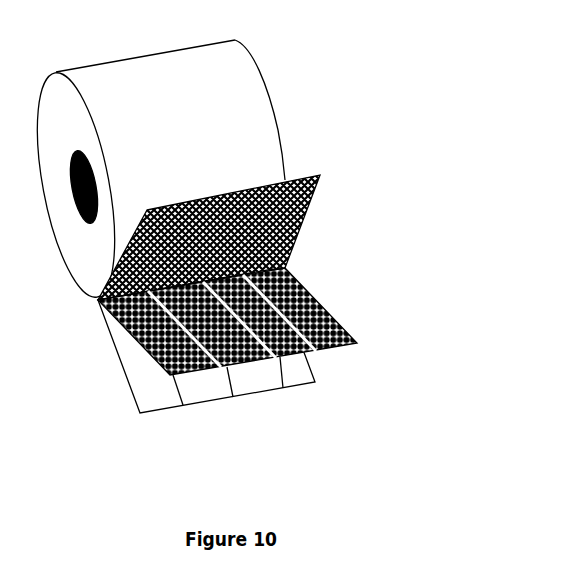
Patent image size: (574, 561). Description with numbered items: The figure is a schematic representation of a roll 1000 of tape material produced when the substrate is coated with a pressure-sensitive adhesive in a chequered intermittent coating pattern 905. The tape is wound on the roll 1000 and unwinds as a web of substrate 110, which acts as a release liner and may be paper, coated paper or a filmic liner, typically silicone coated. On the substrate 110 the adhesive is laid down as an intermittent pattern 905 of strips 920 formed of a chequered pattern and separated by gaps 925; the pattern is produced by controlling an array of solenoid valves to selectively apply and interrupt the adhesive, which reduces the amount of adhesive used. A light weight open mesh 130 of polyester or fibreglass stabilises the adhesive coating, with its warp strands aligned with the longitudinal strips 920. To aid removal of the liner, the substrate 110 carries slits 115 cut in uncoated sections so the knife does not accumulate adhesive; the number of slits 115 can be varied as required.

The roll of tape material 1000 is at (403, 134).
The open mesh 130 is at (288, 233).
The substrate 110 is at (137, 378).
The slits 115 is at (179, 393).
The intermittent coating pattern 905 is at (250, 349).
The strips 920 is at (314, 302).
The gaps 925 is at (270, 368).